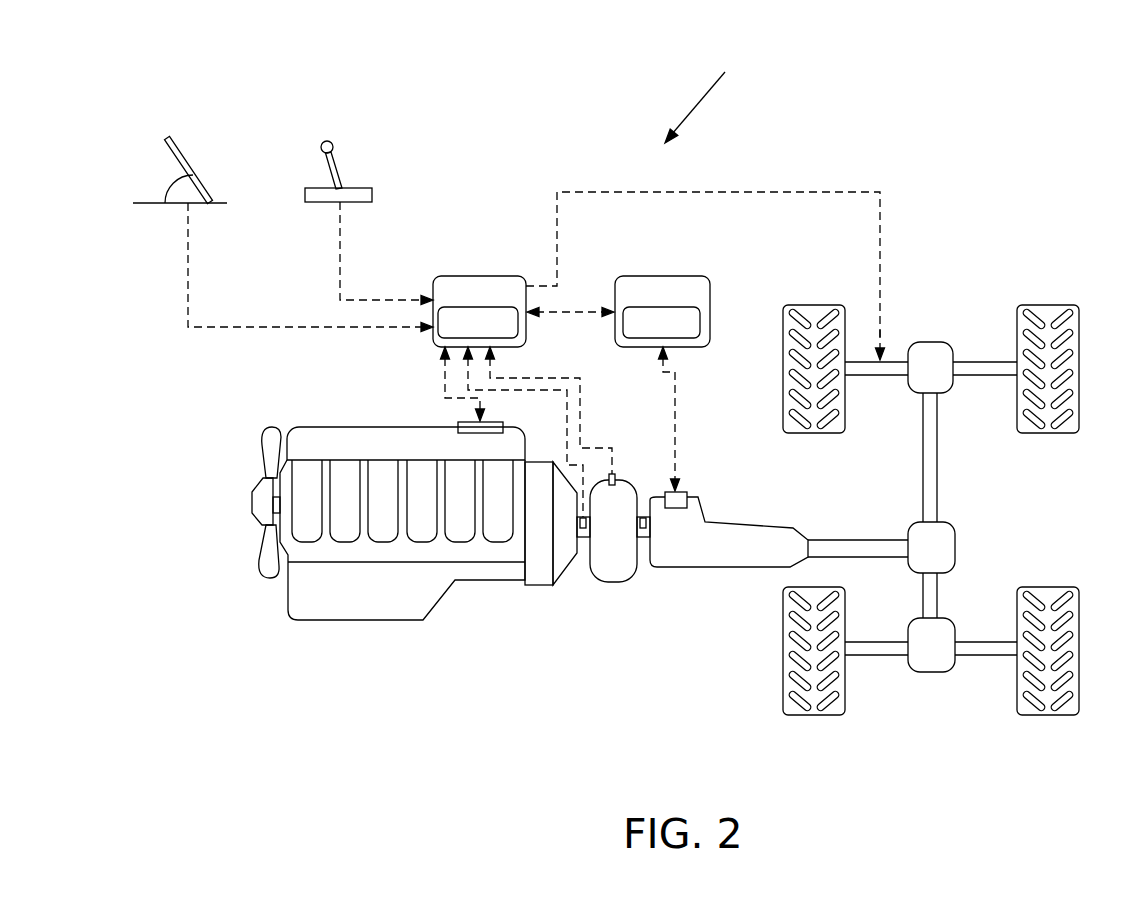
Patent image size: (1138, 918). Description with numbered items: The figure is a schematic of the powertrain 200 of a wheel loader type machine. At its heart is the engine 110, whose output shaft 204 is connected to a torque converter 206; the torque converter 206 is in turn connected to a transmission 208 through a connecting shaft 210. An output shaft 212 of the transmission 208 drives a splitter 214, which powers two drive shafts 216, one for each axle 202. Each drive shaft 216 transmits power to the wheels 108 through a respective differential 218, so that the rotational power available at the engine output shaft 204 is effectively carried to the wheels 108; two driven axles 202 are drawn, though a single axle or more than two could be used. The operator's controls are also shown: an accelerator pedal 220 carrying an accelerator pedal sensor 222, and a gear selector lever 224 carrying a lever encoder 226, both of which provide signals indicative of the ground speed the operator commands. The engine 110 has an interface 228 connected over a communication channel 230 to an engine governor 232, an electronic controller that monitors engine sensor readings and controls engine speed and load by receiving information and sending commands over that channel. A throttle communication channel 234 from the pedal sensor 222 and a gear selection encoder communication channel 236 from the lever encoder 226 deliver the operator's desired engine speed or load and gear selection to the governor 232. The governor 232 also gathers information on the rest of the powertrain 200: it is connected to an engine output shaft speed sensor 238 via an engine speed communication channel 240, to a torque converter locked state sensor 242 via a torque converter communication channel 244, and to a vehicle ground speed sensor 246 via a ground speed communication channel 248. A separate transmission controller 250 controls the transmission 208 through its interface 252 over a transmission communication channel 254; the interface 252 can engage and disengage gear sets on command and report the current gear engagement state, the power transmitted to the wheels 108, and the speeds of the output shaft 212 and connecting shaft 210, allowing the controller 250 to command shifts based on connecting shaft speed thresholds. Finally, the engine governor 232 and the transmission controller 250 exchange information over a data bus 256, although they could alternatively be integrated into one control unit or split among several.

The wheels 108 is at (810, 305).
The engine 110 is at (312, 440).
The powertrain 200 is at (718, 101).
The axle 202 is at (975, 366).
The output shaft 204 is at (582, 538).
The torque converter 206 is at (615, 573).
The transmission 208 is at (742, 540).
The connecting shaft 210 is at (643, 538).
The output shaft 212 is at (823, 545).
The splitter 214 is at (933, 545).
The drive shaft 216 is at (933, 458).
The differential 218 is at (923, 353).
The accelerator pedal 220 is at (173, 145).
The accelerator pedal sensor 222 is at (168, 182).
The gear selector lever 224 is at (327, 140).
The lever encoder 226 is at (358, 203).
The interface 228 is at (460, 424).
The communication channel 230 is at (445, 377).
The engine governor 232 is at (468, 283).
The throttle communication channel 234 is at (188, 259).
The gear selection encoder communication channel 236 is at (340, 241).
The engine output shaft speed sensor 238 is at (578, 523).
The engine speed communication channel 240 is at (567, 437).
The torque converter locked state sensor 242 is at (612, 474).
The torque converter communication channel 244 is at (580, 418).
The vehicle ground speed sensor 246 is at (875, 357).
The ground speed communication channel 248 is at (743, 192).
The transmission controller 250 is at (650, 300).
The interface 252 is at (683, 494).
The transmission communication channel 254 is at (675, 425).
The data bus 256 is at (553, 312).